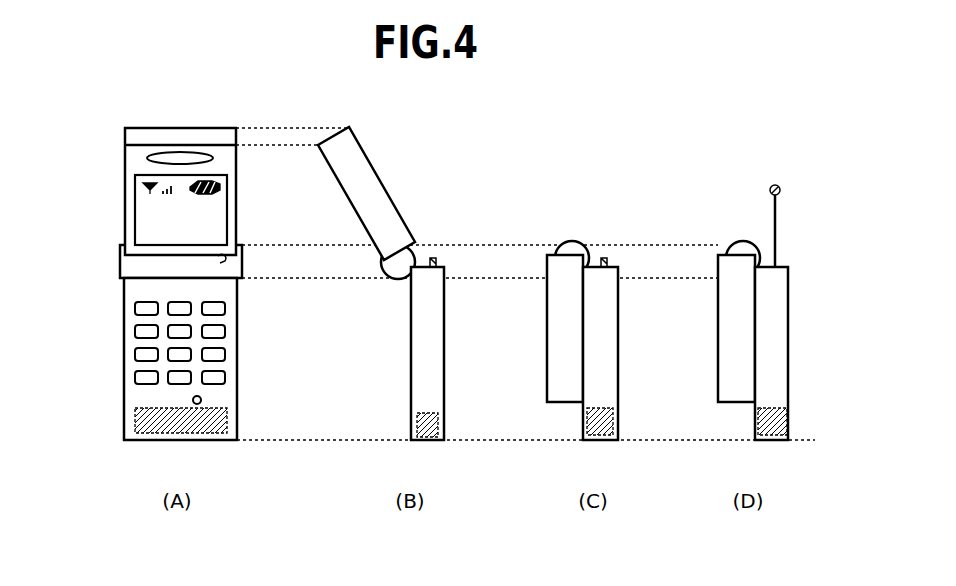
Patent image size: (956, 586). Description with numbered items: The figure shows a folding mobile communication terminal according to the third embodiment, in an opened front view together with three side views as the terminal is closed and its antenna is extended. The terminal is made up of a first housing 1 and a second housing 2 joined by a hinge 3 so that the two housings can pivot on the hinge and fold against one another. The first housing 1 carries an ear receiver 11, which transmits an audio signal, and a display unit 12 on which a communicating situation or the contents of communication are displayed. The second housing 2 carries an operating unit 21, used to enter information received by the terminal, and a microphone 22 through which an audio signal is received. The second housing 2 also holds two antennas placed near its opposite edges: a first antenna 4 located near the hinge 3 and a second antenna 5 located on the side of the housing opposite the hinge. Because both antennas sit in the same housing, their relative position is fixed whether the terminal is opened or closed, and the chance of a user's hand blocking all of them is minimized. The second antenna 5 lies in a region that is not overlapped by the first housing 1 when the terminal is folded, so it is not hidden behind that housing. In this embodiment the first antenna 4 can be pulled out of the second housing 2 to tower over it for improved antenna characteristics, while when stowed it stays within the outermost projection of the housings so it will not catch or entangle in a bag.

The first housing 1 is at (125, 161).
The second housing 2 is at (124, 322).
The hinge 3 is at (122, 272).
The first antenna 4 is at (228, 262).
The second antenna 5 is at (135, 425).
The ear receiver 11 is at (192, 128).
The display unit 12 is at (237, 195).
The operating unit 21 is at (140, 376).
The microphone 22 is at (203, 400).